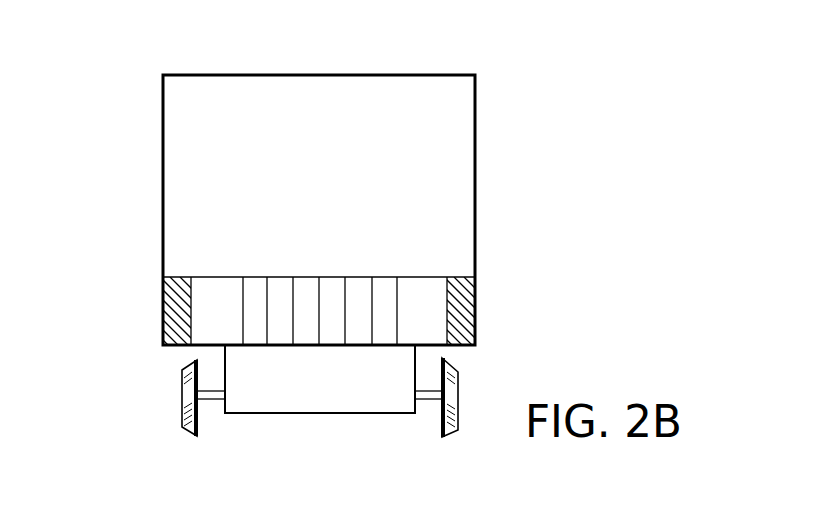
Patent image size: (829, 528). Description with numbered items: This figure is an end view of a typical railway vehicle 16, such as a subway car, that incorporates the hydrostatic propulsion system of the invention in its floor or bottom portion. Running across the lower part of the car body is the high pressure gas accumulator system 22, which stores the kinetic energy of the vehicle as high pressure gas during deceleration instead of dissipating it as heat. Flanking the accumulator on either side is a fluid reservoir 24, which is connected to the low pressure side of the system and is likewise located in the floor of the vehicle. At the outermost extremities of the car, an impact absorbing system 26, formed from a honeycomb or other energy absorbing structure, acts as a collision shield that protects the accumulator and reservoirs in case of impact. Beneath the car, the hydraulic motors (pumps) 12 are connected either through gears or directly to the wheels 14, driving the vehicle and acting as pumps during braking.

The hydraulic motors (pumps) 12 is at (290, 415).
The wheels 14 is at (182, 410).
The vehicle 16 is at (162, 125).
The high pressure gas accumulator system 22 is at (335, 277).
The fluid reservoir 24 is at (210, 277).
The impact absorbing system (collision shield) 26 is at (163, 303).